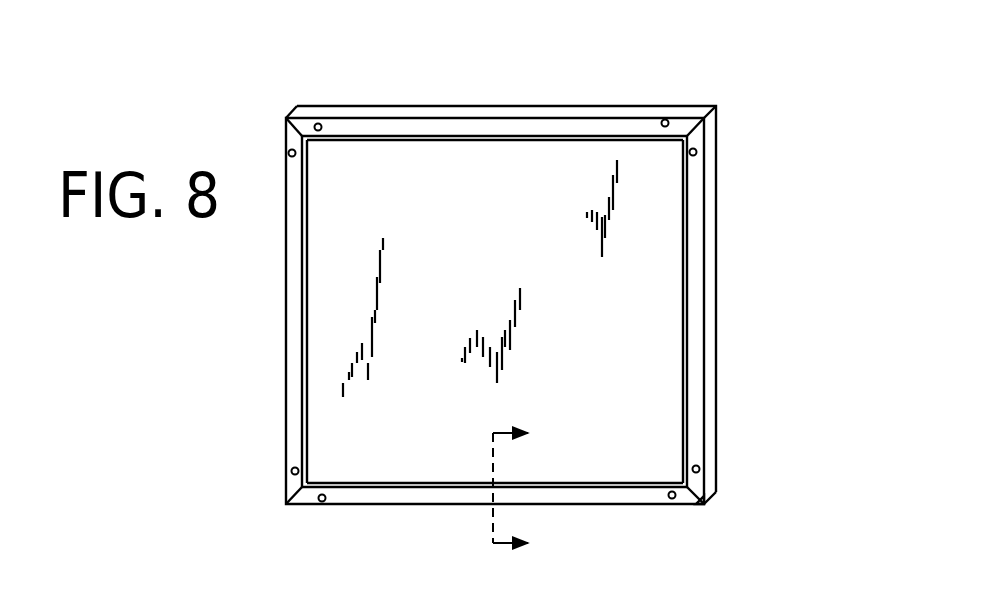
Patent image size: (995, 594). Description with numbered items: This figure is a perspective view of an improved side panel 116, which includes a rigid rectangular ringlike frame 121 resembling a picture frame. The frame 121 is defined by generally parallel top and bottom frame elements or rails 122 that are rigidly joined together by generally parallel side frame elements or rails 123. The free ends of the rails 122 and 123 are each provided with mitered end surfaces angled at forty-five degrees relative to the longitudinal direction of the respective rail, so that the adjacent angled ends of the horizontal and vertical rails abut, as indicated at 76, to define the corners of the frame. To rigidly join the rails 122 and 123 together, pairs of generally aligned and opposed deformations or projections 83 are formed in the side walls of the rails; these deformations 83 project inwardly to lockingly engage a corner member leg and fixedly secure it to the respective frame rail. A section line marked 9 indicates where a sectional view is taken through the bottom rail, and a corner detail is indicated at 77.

The improved side panel 116 is at (271, 332).
The rigid rectangular ringlike frame 121 is at (607, 100).
The top and bottom frame elements or rails 122 is at (452, 118).
The side frame elements or rails 123 is at (695, 262).
The abutting mitered ends 76 is at (686, 112).
The deformations or projections 83 is at (708, 465).
The corner piece 77 is at (694, 505).
The section line 9- 9 is at (525, 487).